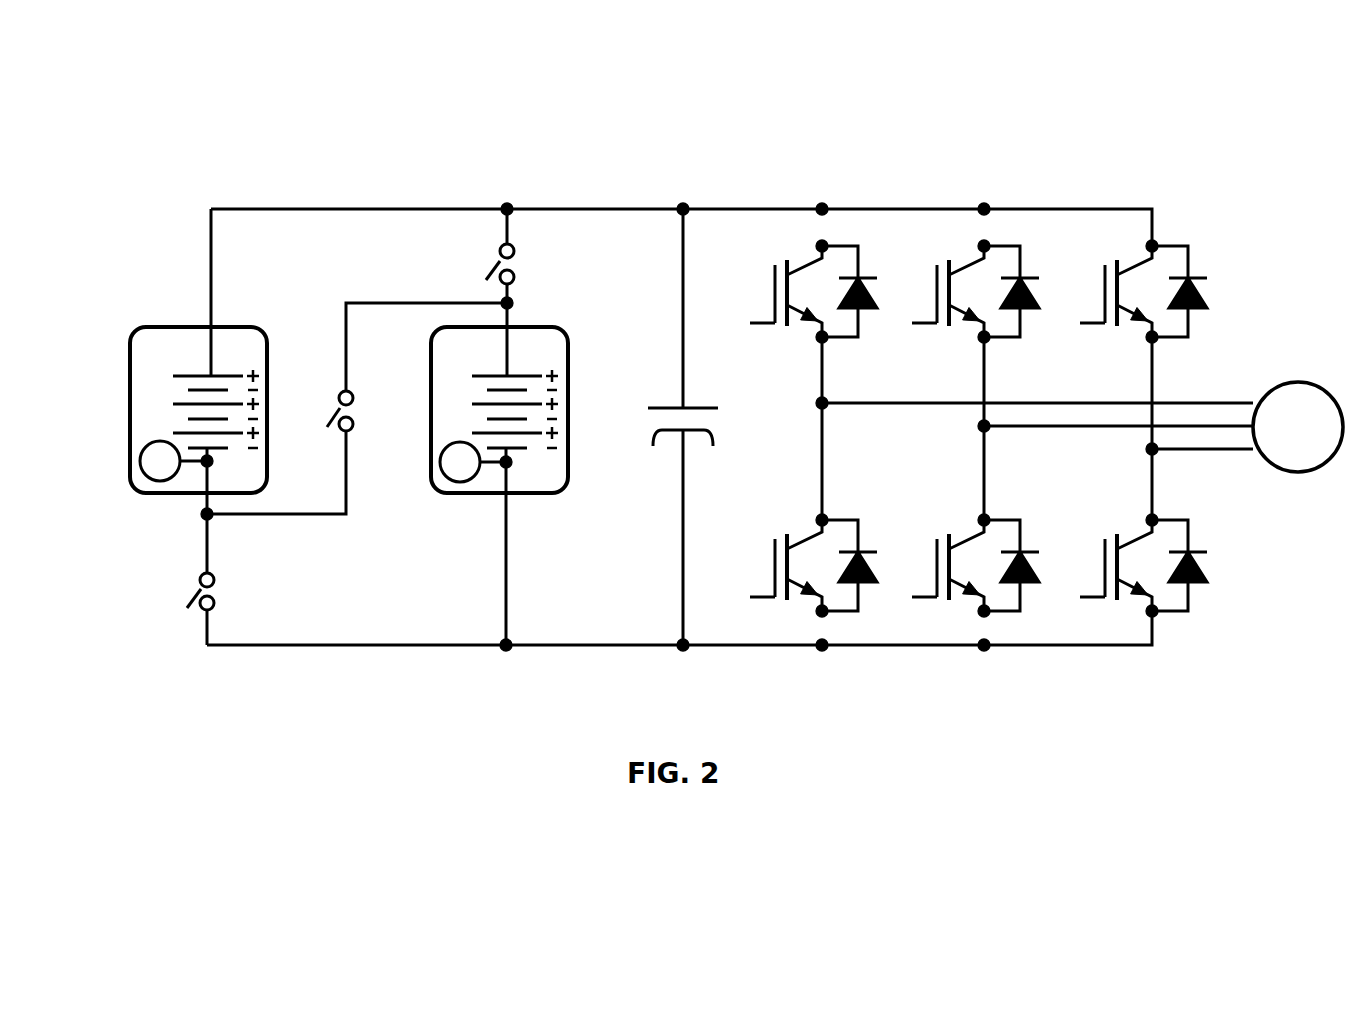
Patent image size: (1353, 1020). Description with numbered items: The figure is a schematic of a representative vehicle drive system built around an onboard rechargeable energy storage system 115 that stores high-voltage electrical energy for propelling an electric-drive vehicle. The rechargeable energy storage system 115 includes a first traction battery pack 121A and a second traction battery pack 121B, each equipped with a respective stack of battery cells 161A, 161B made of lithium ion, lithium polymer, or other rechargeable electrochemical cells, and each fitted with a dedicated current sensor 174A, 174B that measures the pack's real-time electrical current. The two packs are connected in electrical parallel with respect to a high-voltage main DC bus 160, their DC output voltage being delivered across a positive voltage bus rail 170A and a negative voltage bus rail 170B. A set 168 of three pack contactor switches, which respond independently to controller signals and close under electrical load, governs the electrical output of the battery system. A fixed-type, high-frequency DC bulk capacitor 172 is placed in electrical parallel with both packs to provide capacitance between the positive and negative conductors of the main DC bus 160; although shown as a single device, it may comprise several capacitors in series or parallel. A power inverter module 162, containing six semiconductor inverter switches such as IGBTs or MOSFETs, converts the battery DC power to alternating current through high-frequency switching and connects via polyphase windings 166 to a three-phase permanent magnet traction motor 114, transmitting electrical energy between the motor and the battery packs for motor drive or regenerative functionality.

The rechargeable energy storage system 115 is at (230, 193).
The set of pack contactor switches 168 is at (328, 240).
The high-voltage main DC bus 160 is at (679, 403).
The positive voltage bus rail 170A is at (718, 209).
The negative voltage bus rail 170B is at (718, 647).
The power inverter module 162 is at (928, 197).
The polyphase windings 166 is at (1242, 375).
The traction motor 114 is at (1325, 385).
The first traction battery pack 121A is at (180, 390).
The second traction battery pack 121B is at (506, 442).
The first stack of battery cells 161A is at (230, 365).
The second stack of battery cells 161B is at (535, 370).
The first current sensor 174A is at (156, 482).
The second current sensor 174B is at (456, 482).
The DC bulk capacitor 172 is at (660, 456).